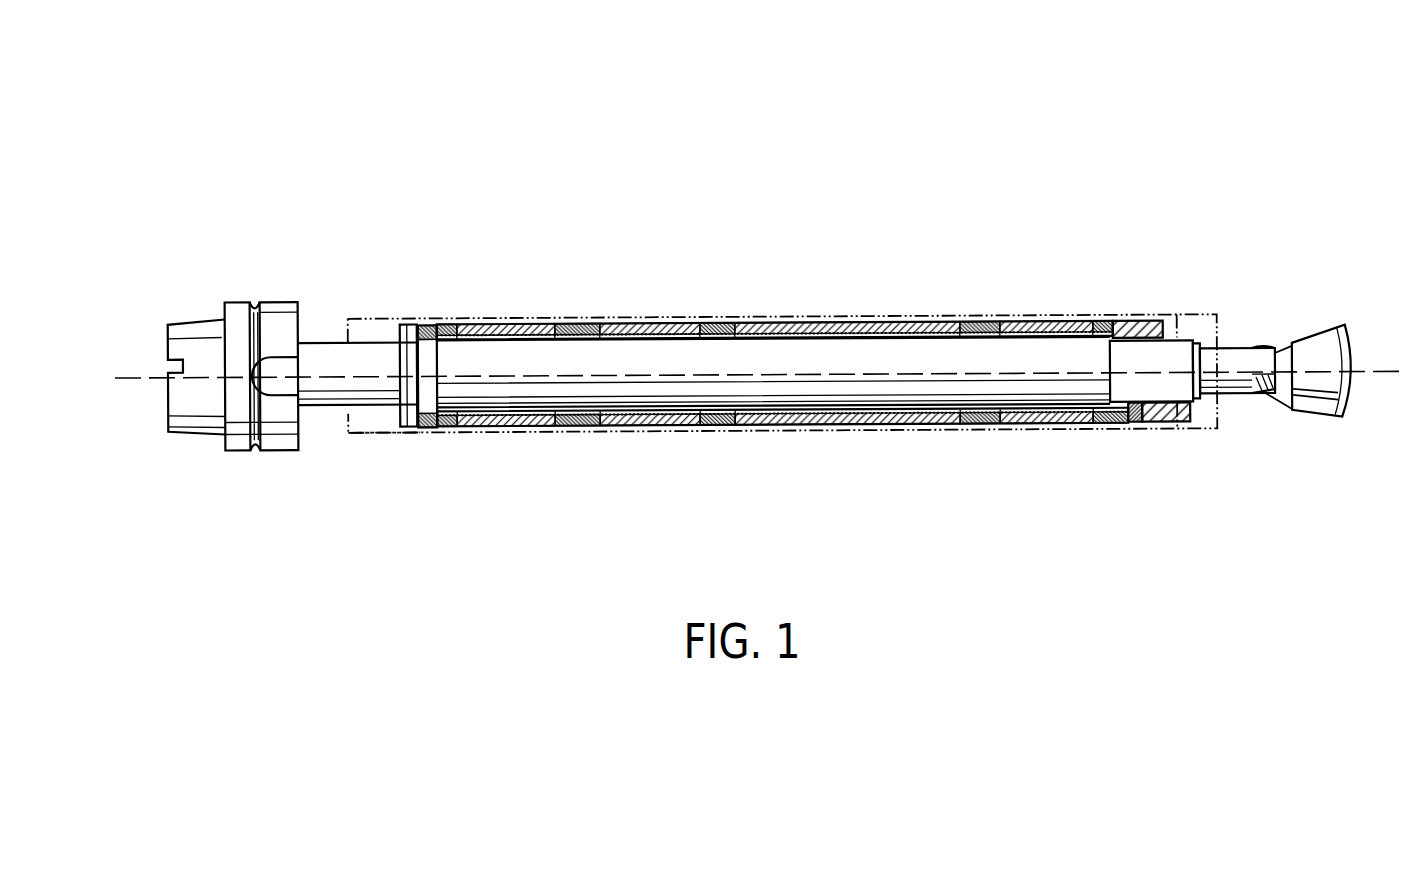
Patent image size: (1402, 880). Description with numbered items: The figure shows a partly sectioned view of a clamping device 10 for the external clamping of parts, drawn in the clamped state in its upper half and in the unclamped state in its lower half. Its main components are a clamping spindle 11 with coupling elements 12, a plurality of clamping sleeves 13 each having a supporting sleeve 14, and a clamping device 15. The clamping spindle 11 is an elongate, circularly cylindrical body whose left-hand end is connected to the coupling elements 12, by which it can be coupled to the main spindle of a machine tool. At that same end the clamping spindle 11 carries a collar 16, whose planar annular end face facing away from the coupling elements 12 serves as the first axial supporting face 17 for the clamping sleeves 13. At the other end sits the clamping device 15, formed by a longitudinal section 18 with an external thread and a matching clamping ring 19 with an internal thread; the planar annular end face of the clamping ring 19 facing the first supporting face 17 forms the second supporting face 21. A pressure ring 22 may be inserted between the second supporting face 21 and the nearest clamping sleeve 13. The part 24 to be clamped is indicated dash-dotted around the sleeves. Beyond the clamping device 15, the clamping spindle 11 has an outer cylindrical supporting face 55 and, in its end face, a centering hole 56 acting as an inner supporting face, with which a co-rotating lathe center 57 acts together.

The clamping device 10 is at (852, 223).
The clamping spindle 11 is at (320, 340).
The coupling elements 12 is at (182, 278).
The clamping sleeves 13 is at (543, 425).
The supporting sleeve 14 is at (495, 345).
The clamping device 15 is at (1120, 226).
The collar 16 is at (408, 324).
The first axial supporting face 17 is at (438, 325).
The longitudinal section 18 is at (1172, 360).
The clamping ring 19 is at (1165, 410).
The second supporting face 21 is at (1124, 424).
The pressure ring 22 is at (1107, 320).
The part 24 is at (373, 434).
The outer cylindrical supporting face 55 is at (1233, 349).
The centering hole 56 is at (1316, 382).
The co-rotating lathe center 57 is at (1322, 337).